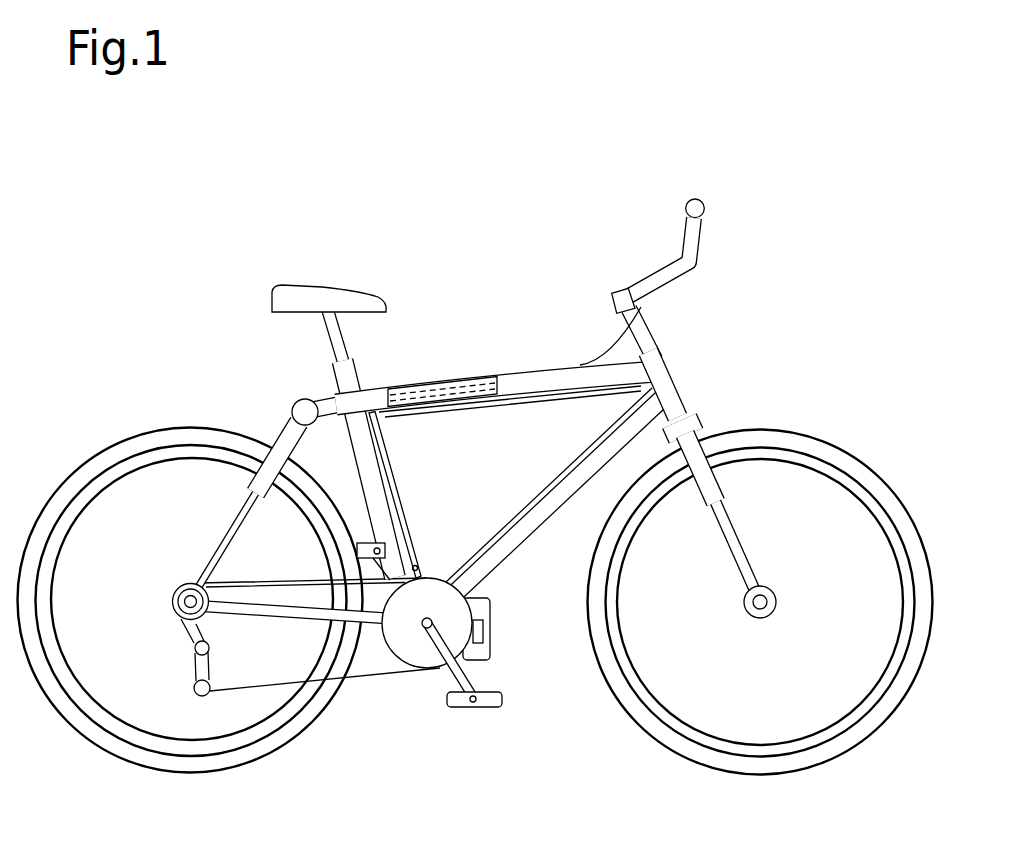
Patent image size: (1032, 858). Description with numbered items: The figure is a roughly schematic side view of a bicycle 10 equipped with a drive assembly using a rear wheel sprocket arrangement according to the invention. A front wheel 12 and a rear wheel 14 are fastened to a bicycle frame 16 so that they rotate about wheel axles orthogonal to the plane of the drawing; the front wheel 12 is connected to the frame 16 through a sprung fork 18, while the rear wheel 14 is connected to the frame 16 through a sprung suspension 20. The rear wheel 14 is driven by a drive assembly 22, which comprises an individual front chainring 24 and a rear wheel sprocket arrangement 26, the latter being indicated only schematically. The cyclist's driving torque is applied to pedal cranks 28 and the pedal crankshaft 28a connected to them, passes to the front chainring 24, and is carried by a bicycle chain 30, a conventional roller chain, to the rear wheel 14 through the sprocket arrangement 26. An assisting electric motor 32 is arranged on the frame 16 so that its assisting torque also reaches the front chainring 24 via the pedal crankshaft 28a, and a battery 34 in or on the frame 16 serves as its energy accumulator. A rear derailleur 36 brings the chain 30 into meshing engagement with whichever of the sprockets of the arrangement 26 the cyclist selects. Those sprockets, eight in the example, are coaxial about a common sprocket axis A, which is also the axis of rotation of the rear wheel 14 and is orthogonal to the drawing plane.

The bicycle 10 is at (432, 248).
The front wheel 12 is at (827, 640).
The rear wheel 14 is at (124, 555).
The bicycle frame 16 is at (520, 362).
The sprung fork 18 is at (687, 443).
The sprung suspension 20 is at (287, 434).
The drive assembly 22 is at (368, 693).
The front chainring 24 is at (413, 637).
The rear wheel sprocket arrangement 26 is at (172, 603).
The pedal cranks 28 is at (457, 673).
The pedal crankshaft 28a is at (428, 617).
The bicycle chain 30 is at (390, 675).
The assisting electric motor 32 is at (474, 611).
The battery 34 is at (452, 386).
The rear derailleur 36 is at (190, 662).
The sprocket axis A is at (189, 599).